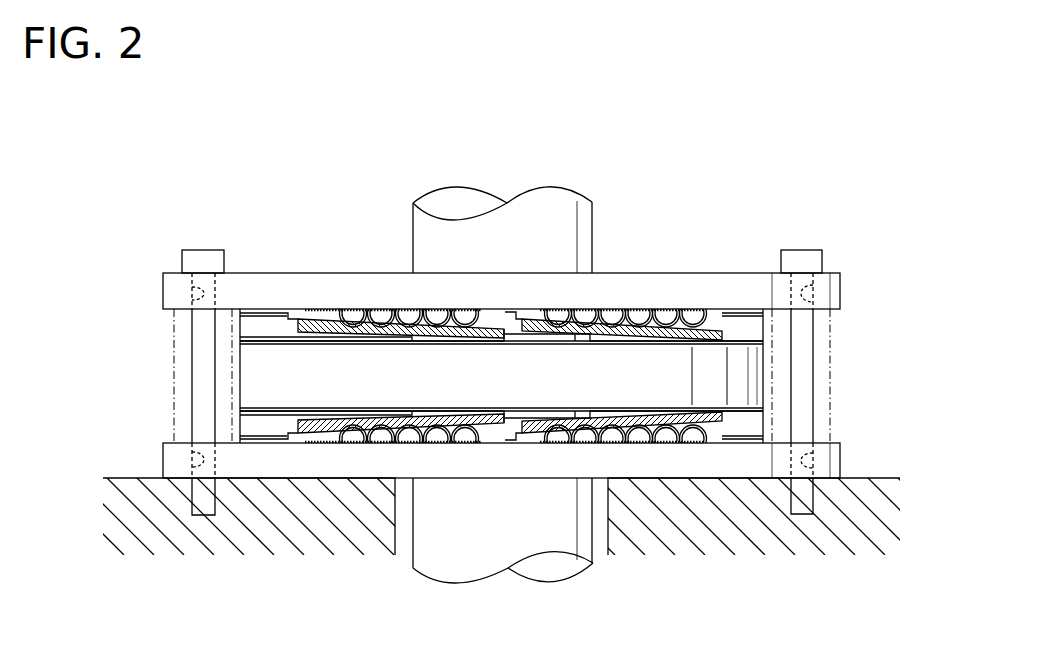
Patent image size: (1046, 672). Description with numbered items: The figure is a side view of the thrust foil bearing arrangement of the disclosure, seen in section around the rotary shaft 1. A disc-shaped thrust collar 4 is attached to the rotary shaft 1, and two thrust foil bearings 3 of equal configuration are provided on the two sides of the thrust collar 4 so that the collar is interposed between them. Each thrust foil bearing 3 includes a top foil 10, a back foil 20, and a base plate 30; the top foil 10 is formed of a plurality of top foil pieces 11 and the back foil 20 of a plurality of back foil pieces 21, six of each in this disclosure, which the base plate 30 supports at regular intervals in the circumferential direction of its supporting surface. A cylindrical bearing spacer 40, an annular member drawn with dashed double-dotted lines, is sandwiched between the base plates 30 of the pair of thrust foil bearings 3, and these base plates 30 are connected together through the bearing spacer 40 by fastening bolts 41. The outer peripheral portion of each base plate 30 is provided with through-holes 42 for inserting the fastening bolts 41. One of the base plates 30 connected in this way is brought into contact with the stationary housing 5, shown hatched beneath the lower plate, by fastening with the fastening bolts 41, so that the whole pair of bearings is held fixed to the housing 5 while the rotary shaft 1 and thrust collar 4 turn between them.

The rotary shaft 1 is at (413, 220).
The thrust foil bearing 3 is at (708, 230).
The thrust collar 4 is at (740, 373).
The housing 5 is at (280, 523).
The top foil 10 is at (627, 325).
The top foil pieces 11 is at (387, 325).
The back foil 20 is at (655, 323).
The back foil pieces 21 is at (358, 312).
The base plate 30 is at (737, 290).
The bearing spacer 40 is at (832, 377).
The fastening bolts 41 is at (203, 252).
The through-holes 42 is at (192, 297).